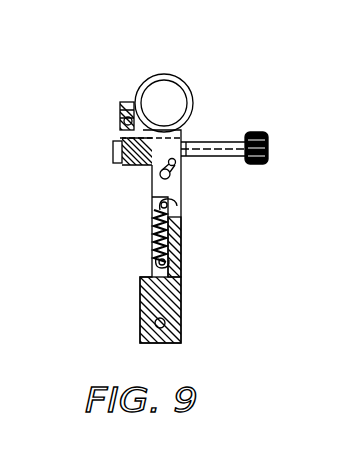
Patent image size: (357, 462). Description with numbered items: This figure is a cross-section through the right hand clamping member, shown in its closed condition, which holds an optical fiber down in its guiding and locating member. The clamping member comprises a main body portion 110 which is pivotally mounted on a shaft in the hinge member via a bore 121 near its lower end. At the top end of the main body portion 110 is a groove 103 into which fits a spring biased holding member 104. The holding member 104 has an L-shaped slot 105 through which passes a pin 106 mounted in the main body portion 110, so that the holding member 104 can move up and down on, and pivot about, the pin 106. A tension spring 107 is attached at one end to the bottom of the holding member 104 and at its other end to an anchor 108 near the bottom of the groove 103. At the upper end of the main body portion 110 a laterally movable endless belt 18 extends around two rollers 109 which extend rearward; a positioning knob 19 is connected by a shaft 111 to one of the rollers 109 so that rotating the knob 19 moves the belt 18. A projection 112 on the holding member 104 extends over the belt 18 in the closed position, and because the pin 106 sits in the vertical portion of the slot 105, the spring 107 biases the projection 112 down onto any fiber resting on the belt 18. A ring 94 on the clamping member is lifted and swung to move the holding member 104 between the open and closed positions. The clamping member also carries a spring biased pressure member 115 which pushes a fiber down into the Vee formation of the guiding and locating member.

The endless belt 18 is at (137, 163).
The positioning knob 19 is at (257, 130).
The ring 94 is at (160, 76).
The groove 103 is at (153, 238).
The holding member 104 is at (182, 198).
The L-shaped slot 105 is at (183, 172).
The pin 106 is at (203, 142).
The tension spring 107 is at (153, 247).
The anchor 108 is at (157, 272).
The roller 109 is at (117, 151).
The main body portion 110 is at (182, 290).
The shaft 111 is at (208, 143).
The projection 112 is at (126, 131).
The pressure member 115 is at (125, 100).
The bore 121 is at (163, 326).